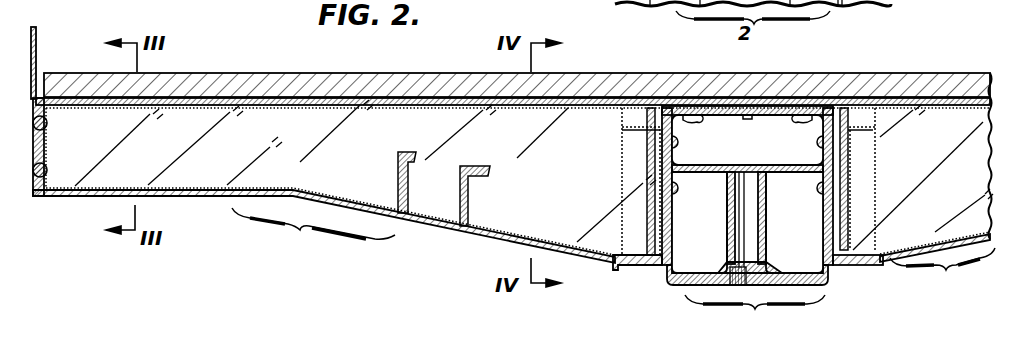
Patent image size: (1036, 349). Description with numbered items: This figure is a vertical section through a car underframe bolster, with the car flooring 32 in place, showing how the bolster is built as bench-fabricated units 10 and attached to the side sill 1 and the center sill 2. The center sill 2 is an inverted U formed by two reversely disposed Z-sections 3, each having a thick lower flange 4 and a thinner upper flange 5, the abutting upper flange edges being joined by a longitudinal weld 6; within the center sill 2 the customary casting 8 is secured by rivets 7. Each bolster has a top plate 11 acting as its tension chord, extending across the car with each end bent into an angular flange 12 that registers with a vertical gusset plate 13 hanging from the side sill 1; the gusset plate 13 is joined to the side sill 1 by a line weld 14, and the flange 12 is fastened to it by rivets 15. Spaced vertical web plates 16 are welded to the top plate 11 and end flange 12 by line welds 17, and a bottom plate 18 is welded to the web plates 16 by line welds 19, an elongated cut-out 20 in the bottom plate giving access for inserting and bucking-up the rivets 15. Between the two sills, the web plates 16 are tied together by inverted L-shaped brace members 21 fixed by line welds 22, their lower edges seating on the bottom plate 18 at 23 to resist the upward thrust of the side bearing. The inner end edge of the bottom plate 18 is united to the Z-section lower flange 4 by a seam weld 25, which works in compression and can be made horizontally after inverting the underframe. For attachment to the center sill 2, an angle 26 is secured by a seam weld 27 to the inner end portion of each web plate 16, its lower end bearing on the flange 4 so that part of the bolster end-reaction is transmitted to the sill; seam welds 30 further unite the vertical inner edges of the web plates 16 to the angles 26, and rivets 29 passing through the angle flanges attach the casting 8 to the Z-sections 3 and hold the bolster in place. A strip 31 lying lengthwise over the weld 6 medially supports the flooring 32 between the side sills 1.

The side sill 1 is at (38, 63).
The center sill 2 is at (747, 219).
The Z-section 3 is at (648, 151).
The lower flange 4 is at (636, 266).
The upper flange 5 is at (708, 115).
The longitudinal weld 6 is at (747, 119).
The rivet 7 is at (682, 140).
The casting 8 is at (728, 216).
The bolster unit 10 is at (613, 248).
The top plate 11 is at (270, 100).
The angular flange 12 is at (45, 174).
The gusset plate 13 is at (38, 148).
The line weld 14 is at (38, 101).
The rivet 15 is at (47, 124).
The web plate 16 is at (999, 166).
The line weld 17 is at (162, 110).
The bottom plate 18 is at (42, 196).
The line weld 19 is at (207, 189).
The cut-out 20 is at (178, 196).
The brace member 21 is at (462, 191).
The line weld 22 is at (398, 170).
The seat 23 is at (402, 220).
The seam weld 25 is at (612, 265).
The angle 26 is at (656, 108).
The seam weld 27 is at (622, 180).
The rivet 29 is at (680, 189).
The seam weld 30 is at (650, 206).
The strip 31 is at (748, 106).
The flooring 32 is at (395, 85).